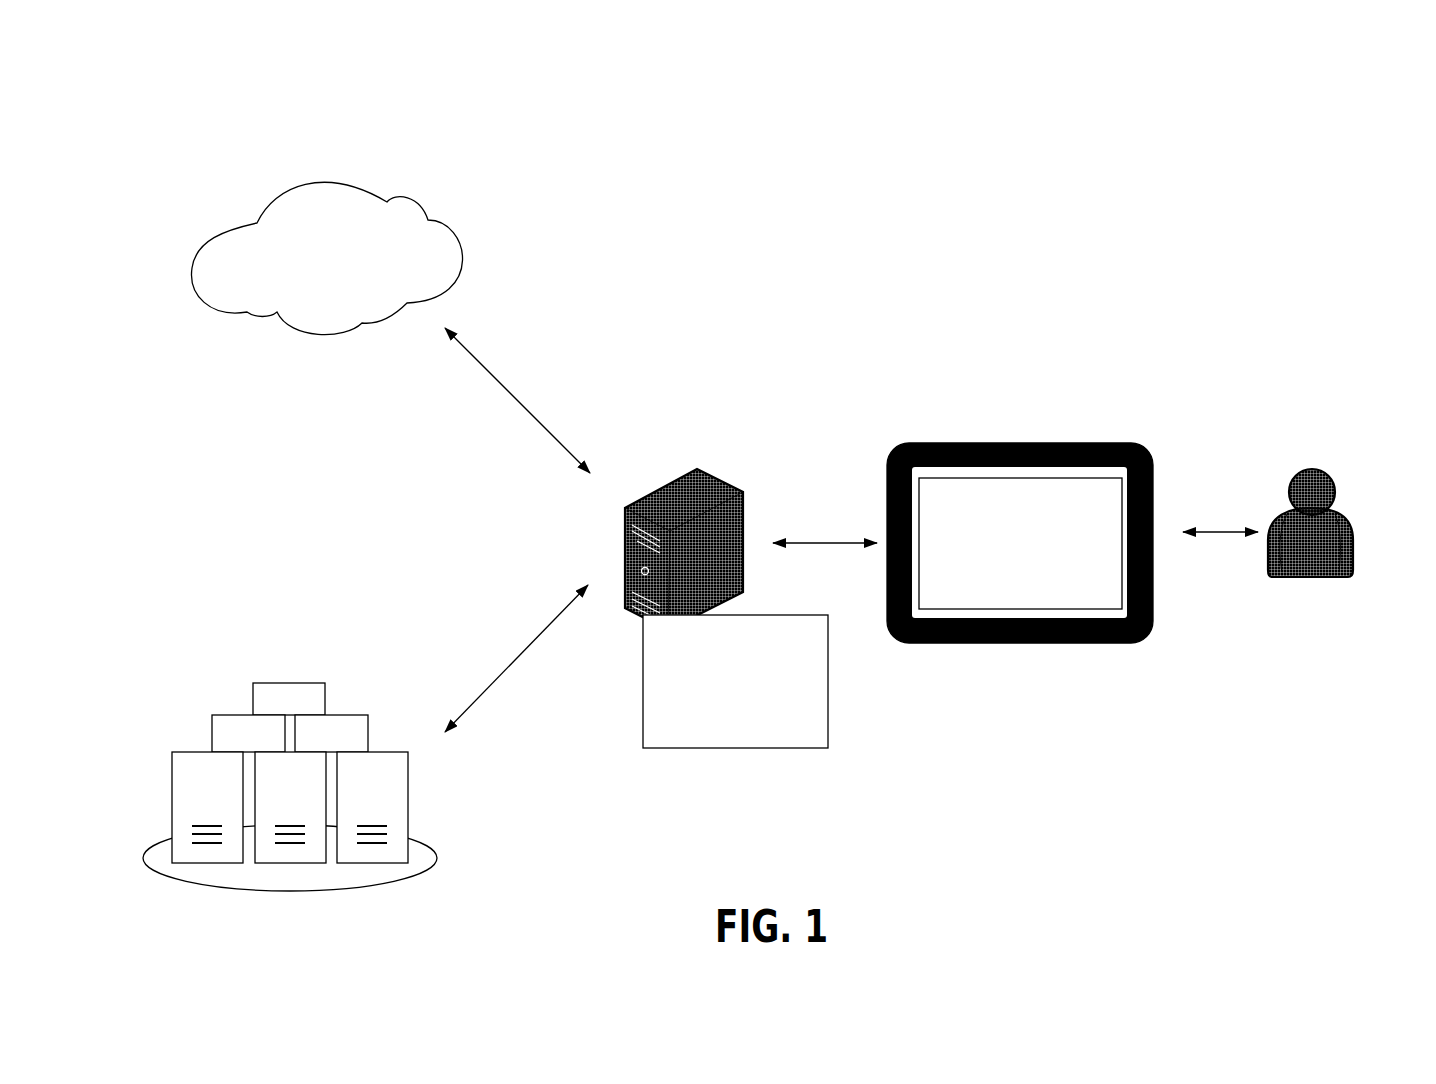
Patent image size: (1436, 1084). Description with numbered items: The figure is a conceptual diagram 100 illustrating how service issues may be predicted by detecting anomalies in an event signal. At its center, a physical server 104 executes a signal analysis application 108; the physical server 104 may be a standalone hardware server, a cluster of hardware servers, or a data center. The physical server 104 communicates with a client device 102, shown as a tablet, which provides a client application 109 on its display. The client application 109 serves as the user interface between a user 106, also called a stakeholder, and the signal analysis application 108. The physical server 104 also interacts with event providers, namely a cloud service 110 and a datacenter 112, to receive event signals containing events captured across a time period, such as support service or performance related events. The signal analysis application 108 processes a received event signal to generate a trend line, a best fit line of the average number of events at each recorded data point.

The diagram 100 is at (1260, 110).
The client device 102 is at (983, 521).
The physical server 104 is at (712, 466).
The user 106 is at (1312, 468).
The signal analysis application 108 is at (643, 708).
The client application 109 is at (930, 483).
The cloud service 110 is at (327, 167).
The datacenter 112 is at (292, 665).